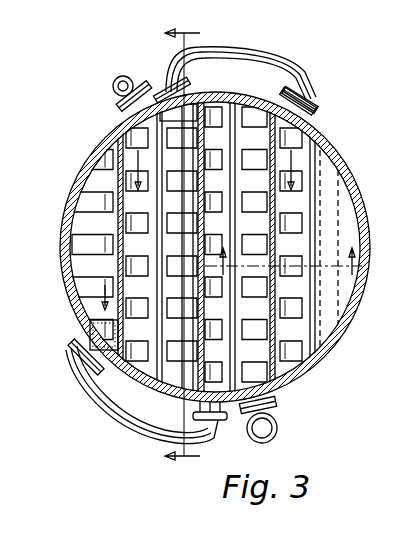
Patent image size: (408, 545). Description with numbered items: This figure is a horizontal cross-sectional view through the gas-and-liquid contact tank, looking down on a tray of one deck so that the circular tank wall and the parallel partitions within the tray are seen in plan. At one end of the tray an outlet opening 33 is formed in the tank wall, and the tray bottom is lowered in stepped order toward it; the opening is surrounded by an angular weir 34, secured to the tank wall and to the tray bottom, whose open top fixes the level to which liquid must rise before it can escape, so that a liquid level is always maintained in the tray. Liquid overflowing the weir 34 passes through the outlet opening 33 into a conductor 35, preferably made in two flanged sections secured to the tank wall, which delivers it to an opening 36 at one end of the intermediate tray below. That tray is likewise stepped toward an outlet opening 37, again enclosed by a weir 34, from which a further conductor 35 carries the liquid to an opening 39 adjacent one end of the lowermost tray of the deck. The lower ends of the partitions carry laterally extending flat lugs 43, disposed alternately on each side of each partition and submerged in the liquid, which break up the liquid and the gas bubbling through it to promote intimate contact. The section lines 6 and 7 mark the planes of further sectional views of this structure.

The section line 6- 6 is at (283, 275).
The section line 7- 7 is at (182, 251).
The outlet opening 33 is at (88, 333).
The weir 34 is at (162, 97).
The conductor 35 is at (78, 432).
The opening 36 is at (192, 412).
The outlet opening 37 is at (236, 91).
The opening 39 is at (312, 134).
The flat lugs 43 is at (97, 202).